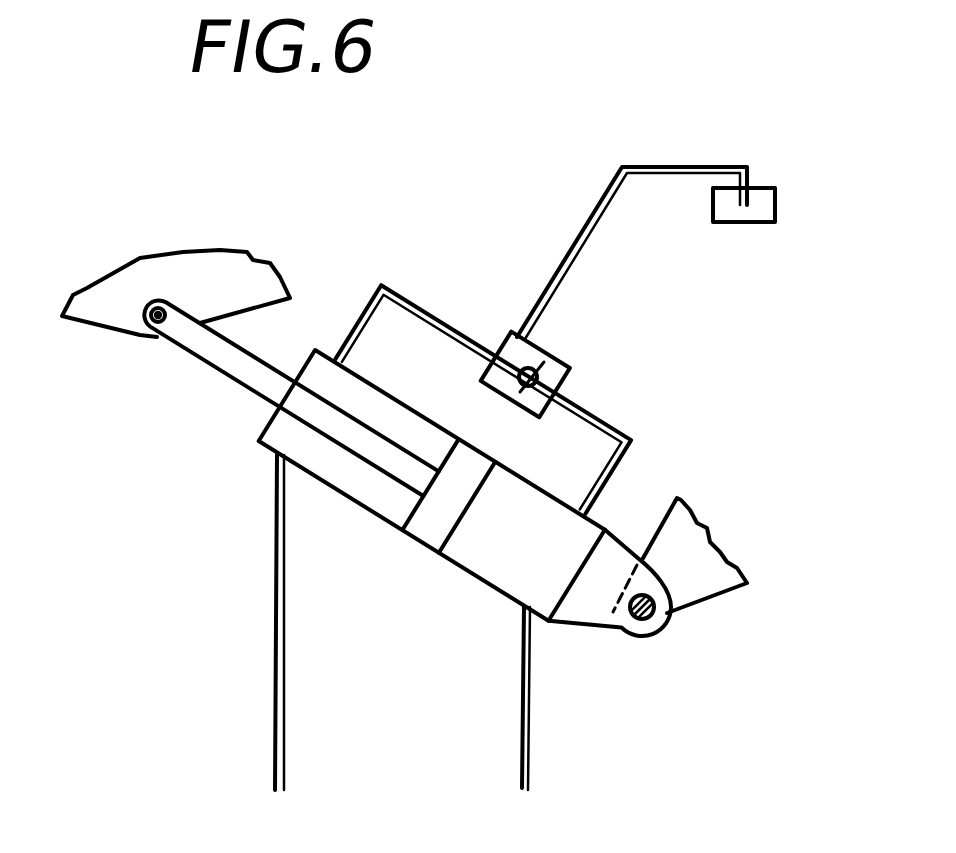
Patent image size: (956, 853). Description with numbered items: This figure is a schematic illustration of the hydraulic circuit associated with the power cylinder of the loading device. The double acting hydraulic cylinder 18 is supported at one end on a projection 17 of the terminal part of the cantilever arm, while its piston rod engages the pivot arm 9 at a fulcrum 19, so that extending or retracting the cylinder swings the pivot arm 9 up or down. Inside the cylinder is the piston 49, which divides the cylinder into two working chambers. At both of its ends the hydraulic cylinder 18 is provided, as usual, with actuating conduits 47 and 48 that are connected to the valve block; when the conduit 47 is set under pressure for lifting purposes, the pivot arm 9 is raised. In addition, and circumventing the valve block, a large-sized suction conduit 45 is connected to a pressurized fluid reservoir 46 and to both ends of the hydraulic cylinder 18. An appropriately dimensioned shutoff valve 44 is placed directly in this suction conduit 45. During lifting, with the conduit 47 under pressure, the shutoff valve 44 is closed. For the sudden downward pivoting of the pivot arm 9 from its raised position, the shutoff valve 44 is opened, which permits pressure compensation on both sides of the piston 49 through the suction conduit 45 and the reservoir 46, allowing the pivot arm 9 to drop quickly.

The pivot arm 9 is at (100, 297).
The projection 17 is at (716, 652).
The hydraulic cylinder 18 is at (386, 536).
The fulcrum 19 is at (155, 307).
The shutoff valve 44 is at (503, 343).
The suction conduit 45 is at (376, 289).
The pressurized fluid reservoir 46 is at (807, 202).
The actuating conduit 47 is at (277, 590).
The actuating conduit 48 is at (588, 715).
The piston 49 is at (433, 528).